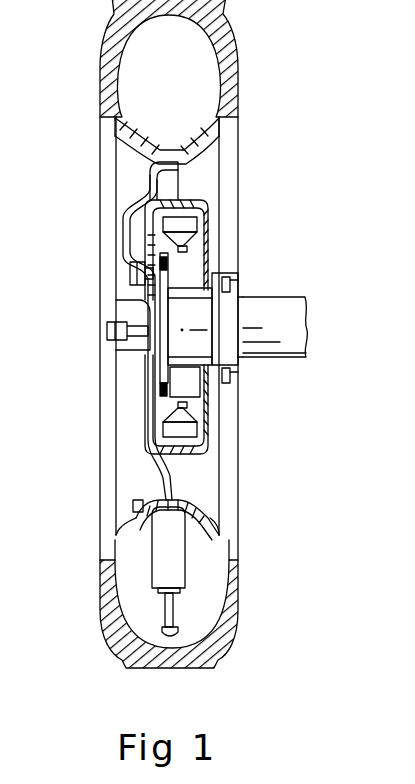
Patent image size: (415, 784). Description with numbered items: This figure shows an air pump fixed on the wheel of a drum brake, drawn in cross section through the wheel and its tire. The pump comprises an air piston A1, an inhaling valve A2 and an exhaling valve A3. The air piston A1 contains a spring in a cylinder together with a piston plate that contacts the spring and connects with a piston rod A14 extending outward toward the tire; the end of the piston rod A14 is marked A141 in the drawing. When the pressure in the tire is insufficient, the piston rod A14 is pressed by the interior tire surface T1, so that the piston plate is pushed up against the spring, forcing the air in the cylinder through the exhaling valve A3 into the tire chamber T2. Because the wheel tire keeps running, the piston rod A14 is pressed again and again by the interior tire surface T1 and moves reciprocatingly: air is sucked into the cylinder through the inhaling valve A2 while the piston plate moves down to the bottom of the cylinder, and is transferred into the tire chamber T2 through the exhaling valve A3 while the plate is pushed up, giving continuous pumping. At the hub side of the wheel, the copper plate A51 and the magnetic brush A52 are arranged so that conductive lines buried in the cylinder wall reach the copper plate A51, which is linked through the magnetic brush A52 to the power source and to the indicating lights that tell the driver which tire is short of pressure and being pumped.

The air piston A1 is at (178, 555).
The piston rod A14 is at (173, 607).
The pin head A141 is at (178, 628).
The inhaling valve A2 is at (140, 523).
The exhaling valve A3 is at (200, 522).
The copper plate A51 is at (168, 260).
The magnetic brush A52 is at (188, 400).
The interior tire surface T1 is at (142, 653).
The tire chamber T2 is at (205, 627).